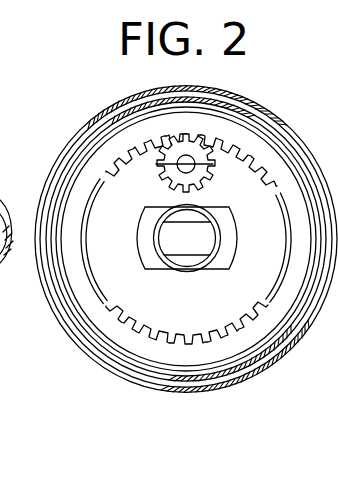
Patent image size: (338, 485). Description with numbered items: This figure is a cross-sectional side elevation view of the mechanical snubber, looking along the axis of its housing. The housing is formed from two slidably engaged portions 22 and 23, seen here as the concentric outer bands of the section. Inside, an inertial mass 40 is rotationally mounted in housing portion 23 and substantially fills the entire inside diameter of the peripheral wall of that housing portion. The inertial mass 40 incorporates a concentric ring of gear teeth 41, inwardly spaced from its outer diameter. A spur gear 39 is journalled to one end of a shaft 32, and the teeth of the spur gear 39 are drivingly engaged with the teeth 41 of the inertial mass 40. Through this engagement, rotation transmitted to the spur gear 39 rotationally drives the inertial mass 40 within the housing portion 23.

The housing portion 22 is at (126, 106).
The housing portion 23 is at (245, 113).
The inertial mass 40 is at (88, 173).
The gear teeth 41 is at (263, 152).
The spur gear 39 is at (160, 164).
The shaft 32 is at (210, 164).